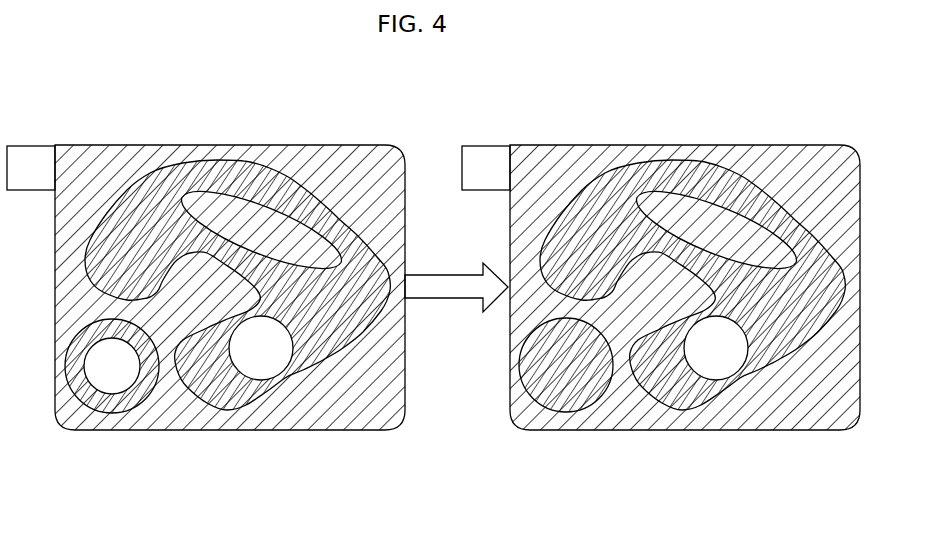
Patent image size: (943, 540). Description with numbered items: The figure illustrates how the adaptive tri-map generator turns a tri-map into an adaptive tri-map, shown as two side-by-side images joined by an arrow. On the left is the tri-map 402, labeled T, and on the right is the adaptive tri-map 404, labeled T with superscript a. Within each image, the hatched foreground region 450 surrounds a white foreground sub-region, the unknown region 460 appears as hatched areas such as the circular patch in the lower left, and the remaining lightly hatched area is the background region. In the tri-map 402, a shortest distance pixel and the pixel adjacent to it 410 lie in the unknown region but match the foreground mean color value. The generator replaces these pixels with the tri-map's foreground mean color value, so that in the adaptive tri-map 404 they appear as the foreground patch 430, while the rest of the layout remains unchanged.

The tri-map 402 is at (125, 145).
The adaptive tri-map 404 is at (580, 145).
The foreground region 450 is at (225, 195).
The unknown region 460 is at (292, 185).
The shortest distance pixel and adjacent pixel 410 is at (264, 380).
The replaced foreground pixel 430 is at (717, 380).